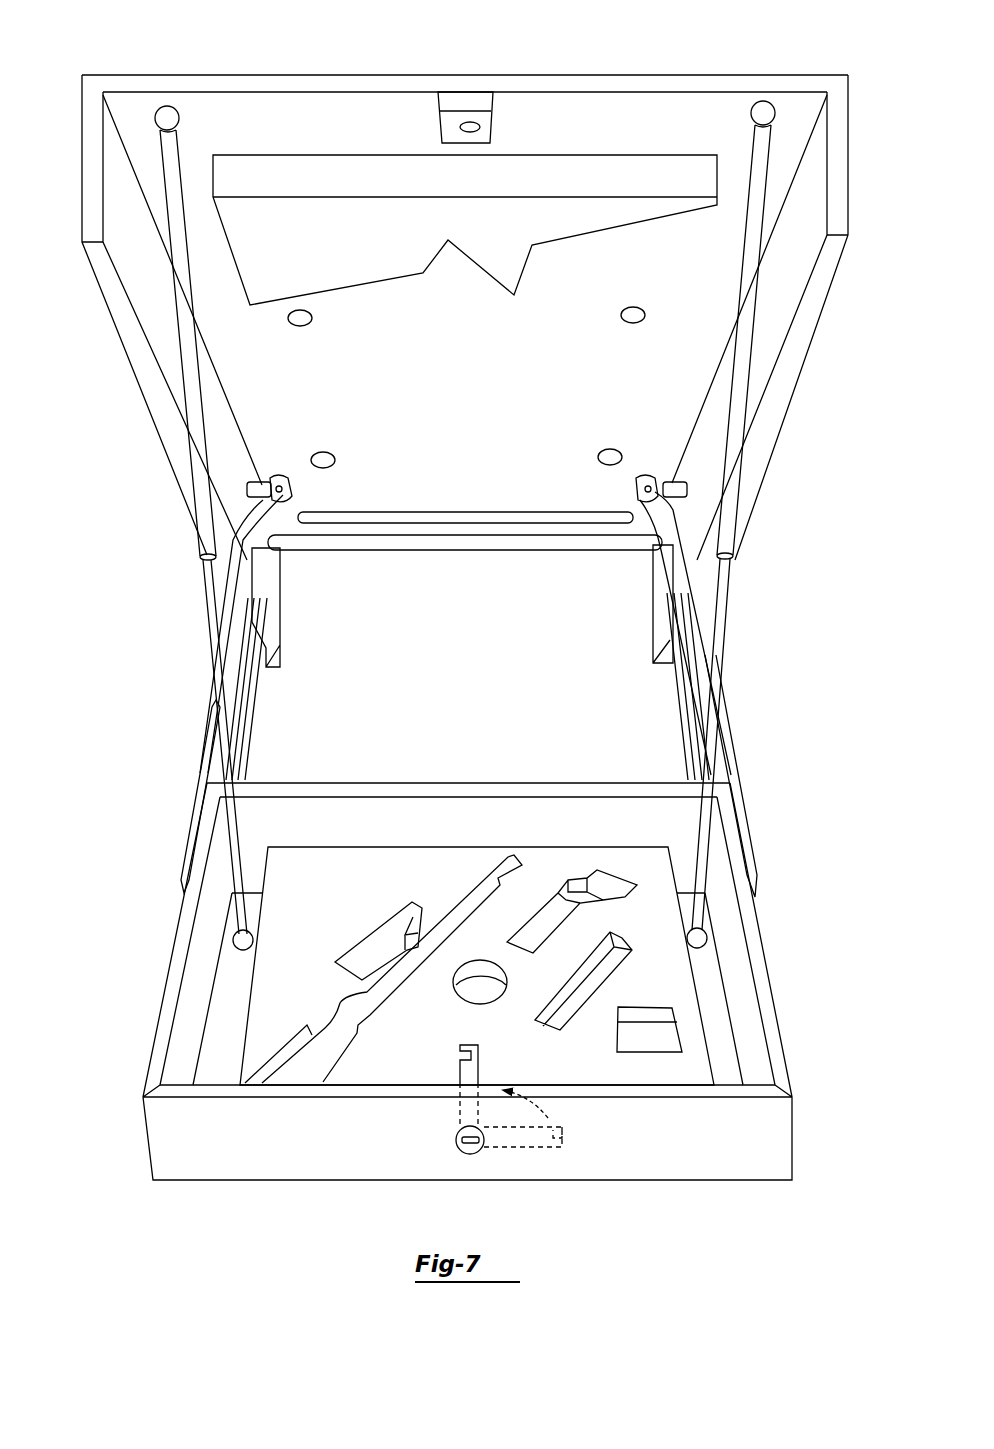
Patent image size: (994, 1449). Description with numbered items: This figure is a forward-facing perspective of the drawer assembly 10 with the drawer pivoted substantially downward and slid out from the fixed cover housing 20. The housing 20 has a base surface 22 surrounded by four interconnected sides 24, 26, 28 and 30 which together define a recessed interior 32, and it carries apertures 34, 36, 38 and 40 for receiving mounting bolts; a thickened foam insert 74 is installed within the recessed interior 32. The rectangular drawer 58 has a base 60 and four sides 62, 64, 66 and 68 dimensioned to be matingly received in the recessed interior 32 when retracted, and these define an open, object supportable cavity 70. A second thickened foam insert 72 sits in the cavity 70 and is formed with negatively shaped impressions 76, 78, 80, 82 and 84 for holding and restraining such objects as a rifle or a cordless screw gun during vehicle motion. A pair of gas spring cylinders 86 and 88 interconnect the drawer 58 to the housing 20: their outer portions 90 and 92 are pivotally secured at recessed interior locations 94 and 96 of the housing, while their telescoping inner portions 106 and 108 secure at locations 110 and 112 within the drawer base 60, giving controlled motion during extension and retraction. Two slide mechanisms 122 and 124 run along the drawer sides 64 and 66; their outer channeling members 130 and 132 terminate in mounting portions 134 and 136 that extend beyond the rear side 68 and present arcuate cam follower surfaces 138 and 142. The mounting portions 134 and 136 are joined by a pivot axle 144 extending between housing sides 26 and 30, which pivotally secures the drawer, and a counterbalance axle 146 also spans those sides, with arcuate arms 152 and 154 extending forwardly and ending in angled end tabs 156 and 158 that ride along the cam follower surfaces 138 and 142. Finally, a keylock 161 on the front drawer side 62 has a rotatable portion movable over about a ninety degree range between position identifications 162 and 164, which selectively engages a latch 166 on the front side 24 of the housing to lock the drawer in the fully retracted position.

The drawer assembly 10 is at (162, 820).
The fixed cover housing 20 is at (268, 70).
The base surface 22 is at (501, 342).
The front side 24 is at (628, 72).
The side 26 is at (140, 280).
The side 28 is at (383, 550).
The side 30 is at (790, 335).
The recessed interior 32 is at (130, 210).
The aperture 34 is at (312, 318).
The aperture 36 is at (335, 458).
The aperture 38 is at (624, 312).
The aperture 40 is at (598, 455).
The drawer 58 is at (112, 1075).
The base 60 is at (248, 1000).
The side 62 is at (355, 1182).
The side 64 is at (190, 1000).
The side 66 is at (745, 990).
The rear side 68 is at (508, 800).
The open cavity 70 is at (205, 1068).
The foam insert 72 is at (312, 860).
The foam insert 74 is at (348, 175).
The negative impression 76 is at (385, 935).
The negative impression 78 is at (470, 986).
The negative impression 80 is at (568, 880).
The negative impression 82 is at (575, 972).
The negative impression 84 is at (665, 1020).
The gas spring cylinder 86 is at (185, 549).
The gas spring cylinder 88 is at (748, 548).
The outer portion 90 is at (190, 380).
The outer portion 92 is at (745, 292).
The securing location 94 is at (150, 113).
The securing location 96 is at (778, 105).
The inner portion 106 is at (212, 666).
The inner portion 108 is at (722, 665).
The securing location 110 is at (240, 928).
The securing location 112 is at (702, 930).
The slide mechanism 122 is at (283, 742).
The slide mechanism 124 is at (658, 745).
The outer channeling member 130 is at (208, 748).
The outer channeling member 132 is at (728, 760).
The mounting portion 134 is at (290, 573).
The mounting portion 136 is at (640, 565).
The cam follower surface 138 is at (250, 525).
The cam follower surface 142 is at (688, 505).
The pivot axle 144 is at (460, 552).
The counterbalance axle 146 is at (462, 508).
The arm 152 is at (290, 485).
The arm 154 is at (640, 500).
The end tab 156 is at (256, 484).
The end tab 158 is at (652, 478).
The keylock 161 is at (462, 1158).
The rotatable portion 162 is at (455, 1140).
The position identification 164 is at (458, 1058).
The latch 166 is at (465, 115).